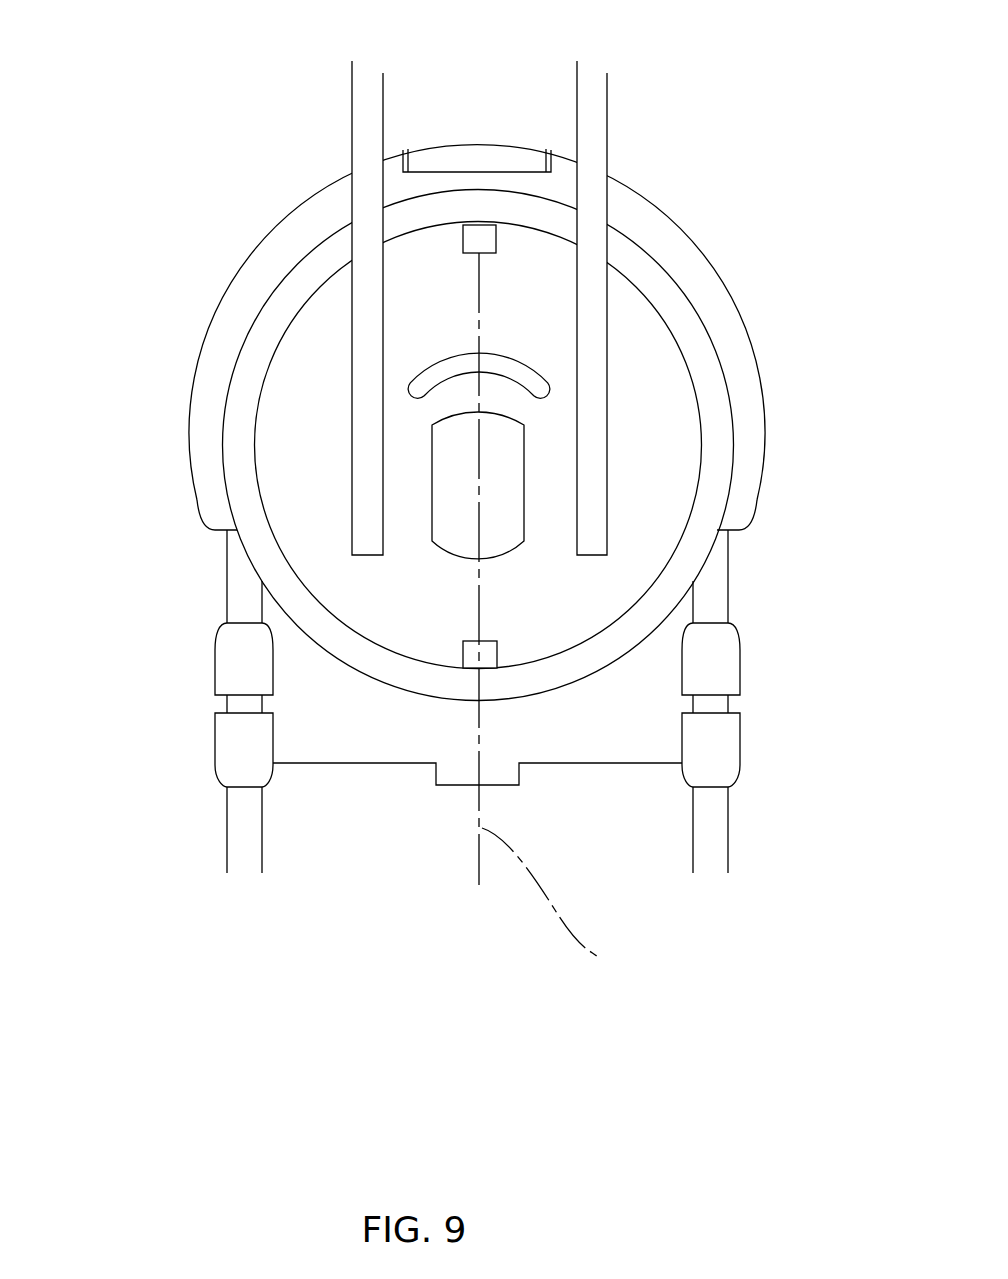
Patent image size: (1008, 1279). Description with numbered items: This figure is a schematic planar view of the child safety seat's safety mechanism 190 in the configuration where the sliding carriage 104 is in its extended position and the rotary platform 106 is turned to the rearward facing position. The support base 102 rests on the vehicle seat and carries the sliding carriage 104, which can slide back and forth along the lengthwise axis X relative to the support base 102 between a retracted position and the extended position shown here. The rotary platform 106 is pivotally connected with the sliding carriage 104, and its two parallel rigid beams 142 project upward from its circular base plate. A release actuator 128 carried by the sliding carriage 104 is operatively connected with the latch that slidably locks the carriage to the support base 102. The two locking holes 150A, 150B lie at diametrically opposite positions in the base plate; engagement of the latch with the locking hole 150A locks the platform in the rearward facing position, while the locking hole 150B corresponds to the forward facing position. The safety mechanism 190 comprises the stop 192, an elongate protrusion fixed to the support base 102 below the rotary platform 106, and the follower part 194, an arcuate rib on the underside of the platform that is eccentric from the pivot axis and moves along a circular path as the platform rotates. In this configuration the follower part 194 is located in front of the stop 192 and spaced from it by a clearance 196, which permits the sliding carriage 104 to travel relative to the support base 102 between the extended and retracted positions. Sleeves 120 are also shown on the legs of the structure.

The support base 102 is at (216, 811).
The sliding carriage 104 is at (697, 232).
The rotary platform 106 is at (248, 322).
The leg sleeves 120 is at (205, 692).
The release actuator 128 is at (472, 158).
The rigid beams 142 is at (368, 157).
The locking hole 150A is at (510, 656).
The locking hole 150B is at (455, 240).
The safety mechanism 190 is at (433, 572).
The stop 192 is at (524, 495).
The follower part 194 is at (552, 394).
The clearance 196 is at (422, 408).
The lengthwise axis X is at (548, 617).